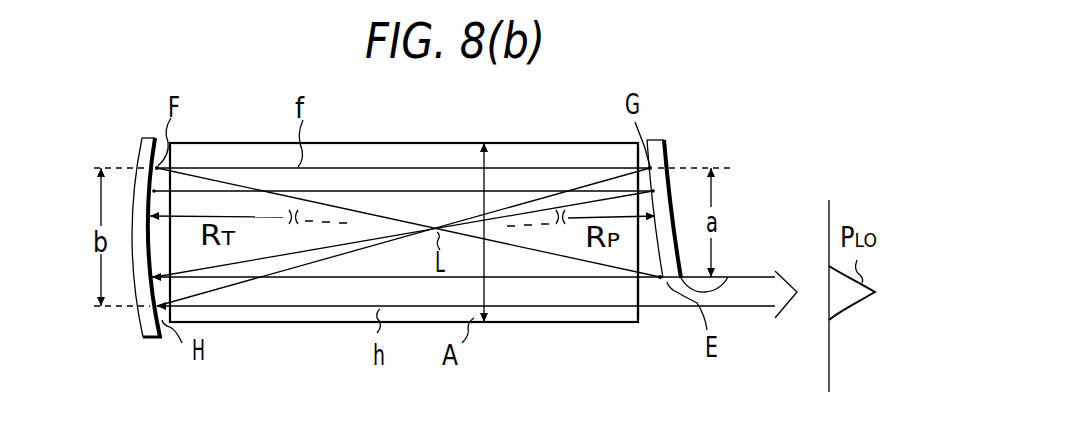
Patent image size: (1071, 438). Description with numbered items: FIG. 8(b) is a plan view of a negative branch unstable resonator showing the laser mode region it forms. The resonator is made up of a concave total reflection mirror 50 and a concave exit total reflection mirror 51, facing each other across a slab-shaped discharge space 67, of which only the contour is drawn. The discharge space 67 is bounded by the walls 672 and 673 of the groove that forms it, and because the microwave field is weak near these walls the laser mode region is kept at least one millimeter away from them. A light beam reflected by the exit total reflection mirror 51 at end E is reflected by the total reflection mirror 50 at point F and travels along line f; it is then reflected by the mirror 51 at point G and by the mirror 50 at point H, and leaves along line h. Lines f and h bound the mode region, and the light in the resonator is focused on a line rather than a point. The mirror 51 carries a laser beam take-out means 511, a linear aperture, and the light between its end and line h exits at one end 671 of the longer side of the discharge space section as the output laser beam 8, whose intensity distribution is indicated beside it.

The laser beam 8 is at (750, 297).
The total reflection mirror 50 is at (142, 153).
The exit total reflection mirror 51 is at (664, 158).
The discharge space 67 is at (400, 196).
The end of the longer side of the discharge space section 671 is at (640, 321).
The wall of groove forming the discharge space 672 is at (537, 323).
The wall of groove forming the discharge space 673 is at (530, 143).
The laser beam take-out means 511 is at (728, 272).